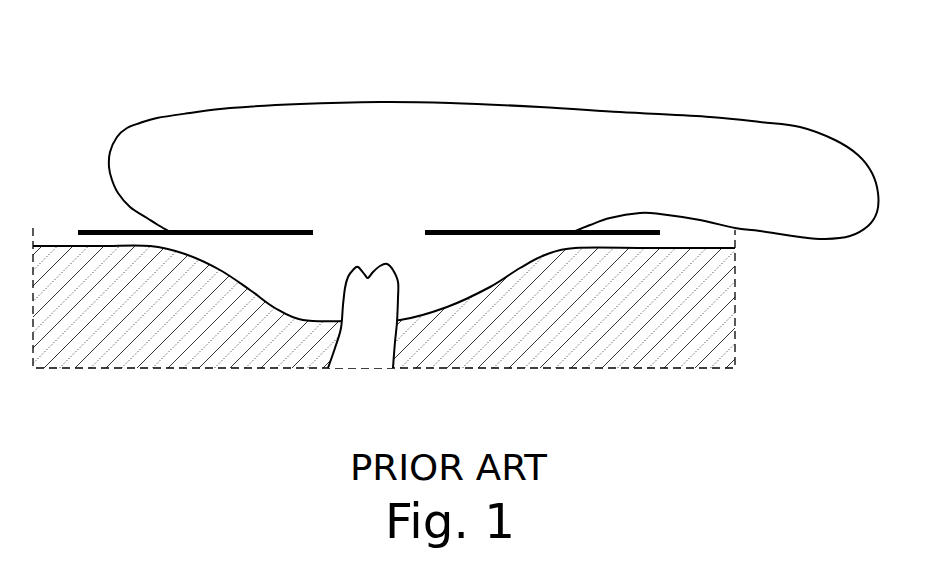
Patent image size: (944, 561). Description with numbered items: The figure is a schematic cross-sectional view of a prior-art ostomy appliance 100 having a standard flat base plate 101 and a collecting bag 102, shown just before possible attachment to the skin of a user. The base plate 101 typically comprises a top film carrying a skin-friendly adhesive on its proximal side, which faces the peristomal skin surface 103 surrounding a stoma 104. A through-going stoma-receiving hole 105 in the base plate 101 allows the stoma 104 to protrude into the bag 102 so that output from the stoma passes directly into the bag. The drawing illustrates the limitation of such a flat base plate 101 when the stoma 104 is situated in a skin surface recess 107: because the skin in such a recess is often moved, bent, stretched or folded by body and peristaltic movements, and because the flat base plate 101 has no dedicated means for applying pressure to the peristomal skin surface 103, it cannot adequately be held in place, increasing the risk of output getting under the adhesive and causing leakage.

The ostomy appliance 100 is at (86, 123).
The base plate 101 is at (255, 231).
The collecting bag 102 is at (710, 116).
The peristomal skin surface 103 is at (259, 305).
The stoma 104 is at (378, 298).
The stoma-receiving hole 105 is at (393, 245).
The skin surface recess 107 is at (495, 247).